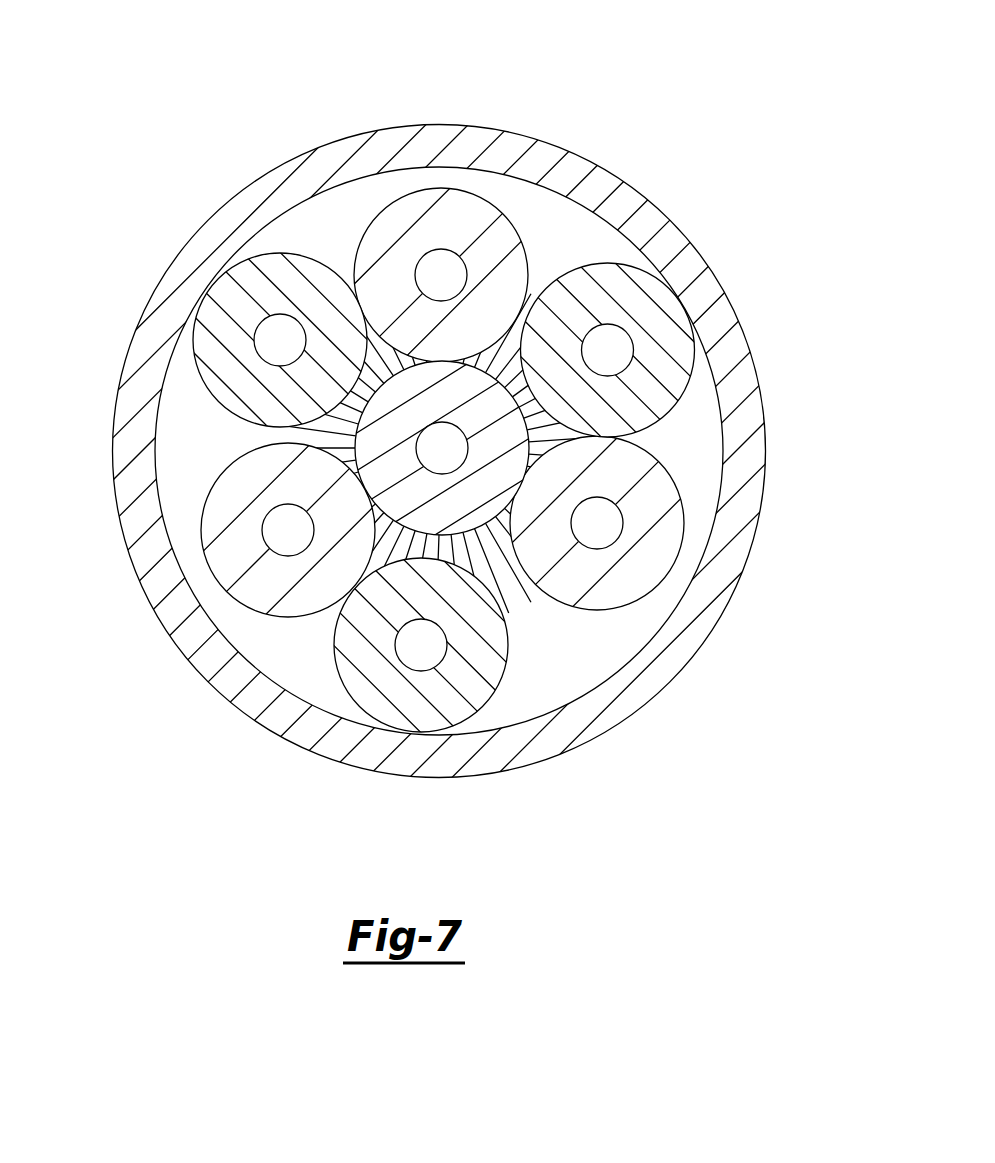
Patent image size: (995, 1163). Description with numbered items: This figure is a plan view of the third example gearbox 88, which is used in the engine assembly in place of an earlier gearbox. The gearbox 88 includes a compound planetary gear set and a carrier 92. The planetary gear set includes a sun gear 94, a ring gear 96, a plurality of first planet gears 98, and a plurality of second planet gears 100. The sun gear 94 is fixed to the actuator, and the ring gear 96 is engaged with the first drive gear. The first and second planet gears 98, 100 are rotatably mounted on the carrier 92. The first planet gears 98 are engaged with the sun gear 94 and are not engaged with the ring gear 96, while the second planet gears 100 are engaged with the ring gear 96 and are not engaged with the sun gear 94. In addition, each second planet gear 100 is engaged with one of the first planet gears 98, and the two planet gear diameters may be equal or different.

The gearbox 88 is at (274, 58).
The carrier 92 is at (513, 586).
The sun gear 94 is at (496, 446).
The ring gear 96 is at (683, 235).
The first planet gears 98 is at (464, 208).
The second planet gears 100 is at (216, 349).